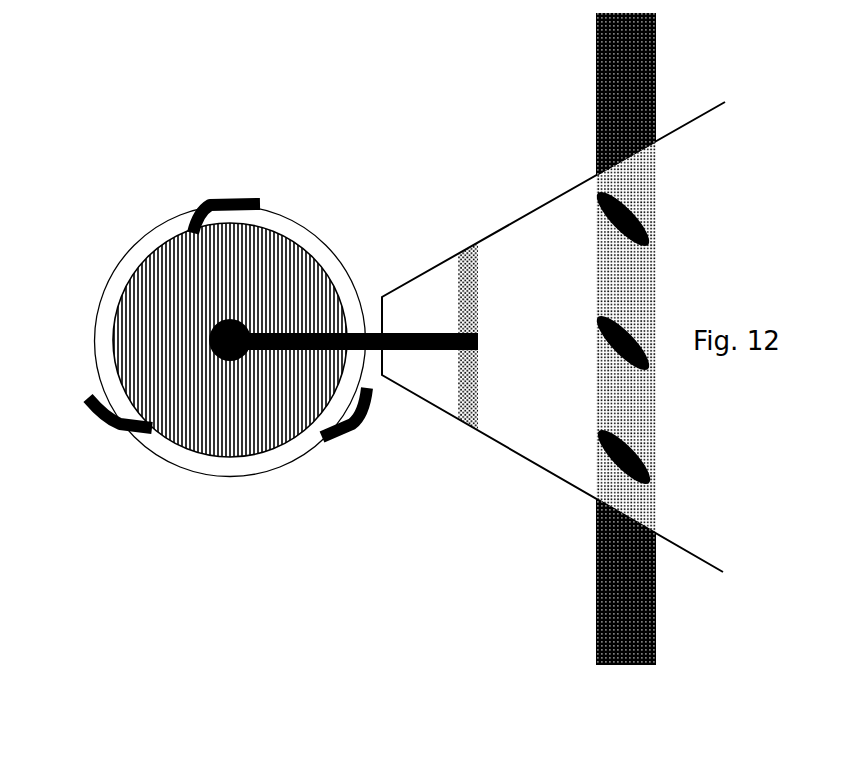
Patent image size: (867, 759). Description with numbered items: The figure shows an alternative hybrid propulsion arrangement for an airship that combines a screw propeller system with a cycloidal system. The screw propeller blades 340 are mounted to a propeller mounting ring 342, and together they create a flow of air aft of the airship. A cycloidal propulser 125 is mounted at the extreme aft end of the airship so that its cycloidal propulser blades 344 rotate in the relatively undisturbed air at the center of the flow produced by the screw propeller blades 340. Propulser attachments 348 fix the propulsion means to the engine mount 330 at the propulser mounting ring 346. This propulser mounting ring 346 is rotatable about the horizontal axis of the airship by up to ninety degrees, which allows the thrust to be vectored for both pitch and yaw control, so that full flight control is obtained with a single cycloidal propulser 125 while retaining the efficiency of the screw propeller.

The cycloidal propulser 125 is at (200, 472).
The engine mount 330 is at (518, 220).
The screw propeller blades 340 is at (596, 98).
The propeller mounting ring 342 is at (622, 393).
The cycloidal propulser blades 344 is at (100, 415).
The propulser mounting ring 346 is at (467, 380).
The propulser attachments 348 is at (403, 350).